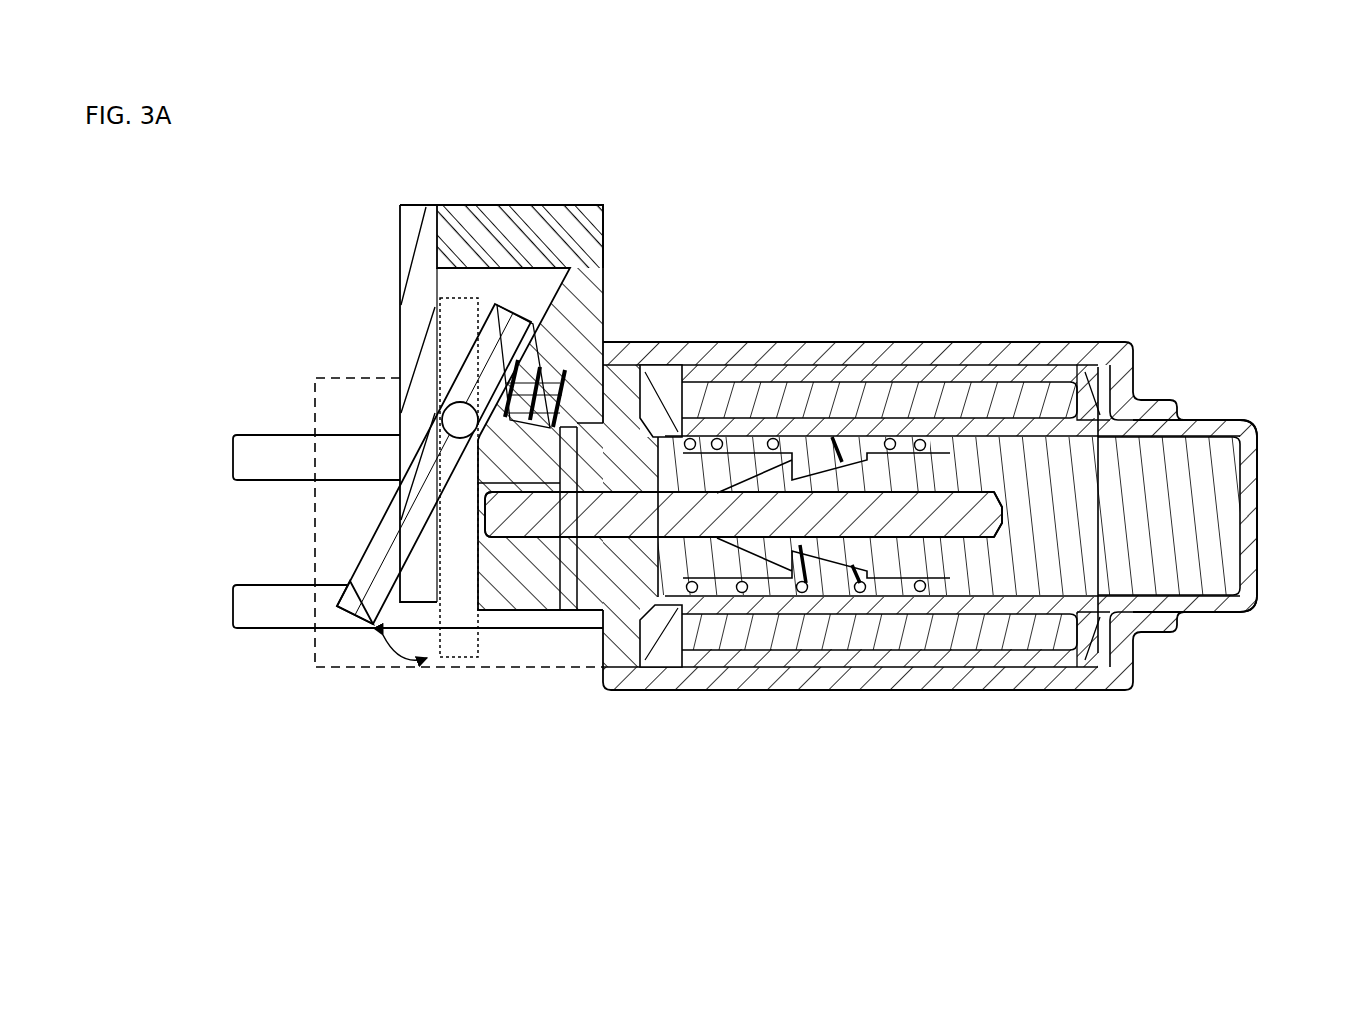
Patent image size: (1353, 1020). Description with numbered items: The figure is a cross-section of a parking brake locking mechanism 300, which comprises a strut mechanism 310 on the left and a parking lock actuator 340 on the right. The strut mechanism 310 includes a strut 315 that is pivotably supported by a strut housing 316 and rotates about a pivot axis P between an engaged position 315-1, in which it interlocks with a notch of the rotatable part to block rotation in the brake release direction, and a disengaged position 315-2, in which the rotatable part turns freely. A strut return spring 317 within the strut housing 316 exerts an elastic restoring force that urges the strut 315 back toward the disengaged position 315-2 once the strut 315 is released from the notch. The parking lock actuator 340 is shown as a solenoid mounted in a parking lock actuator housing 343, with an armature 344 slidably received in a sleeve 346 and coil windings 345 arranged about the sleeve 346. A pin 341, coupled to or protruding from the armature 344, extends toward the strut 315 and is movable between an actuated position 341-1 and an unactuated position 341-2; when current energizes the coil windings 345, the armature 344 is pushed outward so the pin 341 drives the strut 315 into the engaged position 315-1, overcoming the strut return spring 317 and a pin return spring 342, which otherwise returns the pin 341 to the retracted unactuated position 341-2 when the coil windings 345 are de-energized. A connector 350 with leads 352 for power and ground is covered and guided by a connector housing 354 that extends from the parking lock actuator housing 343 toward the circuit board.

The parking brake locking mechanism 300 is at (58, 228).
The strut mechanism 310 is at (462, 193).
The strut housing 316 is at (605, 216).
The strut return spring 317 is at (548, 378).
The strut 315 is at (400, 520).
The engaged position 315-1 is at (362, 605).
The disengaged position 315-2 is at (453, 640).
The pivot axis P is at (462, 422).
The connector 350 is at (296, 360).
The leads 352 is at (240, 442).
The connector housing 354 is at (315, 530).
The parking lock actuator 340 is at (859, 703).
The pin 341 is at (695, 522).
The actuated position 341-1 is at (443, 530).
The unactuated position 341-2 is at (930, 522).
The pin return spring 342 is at (773, 444).
The parking lock actuator housing 343 is at (1247, 579).
The armature 344 is at (1213, 510).
The coil windings 345 is at (993, 402).
The sleeve 346 is at (1098, 382).